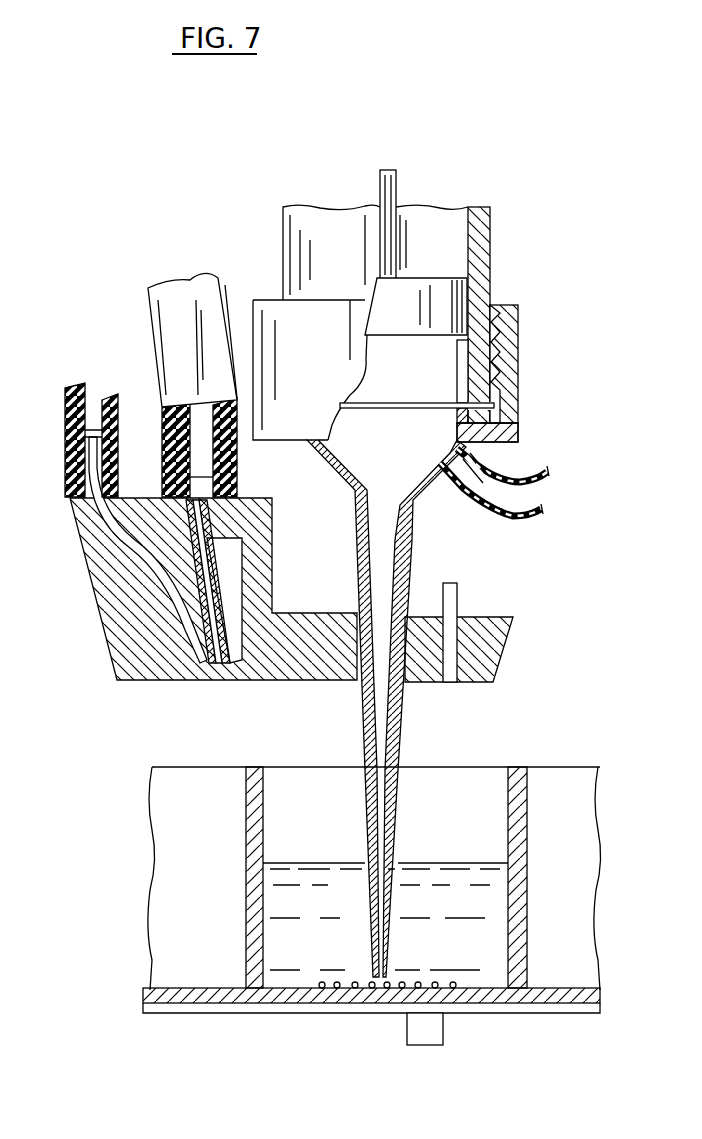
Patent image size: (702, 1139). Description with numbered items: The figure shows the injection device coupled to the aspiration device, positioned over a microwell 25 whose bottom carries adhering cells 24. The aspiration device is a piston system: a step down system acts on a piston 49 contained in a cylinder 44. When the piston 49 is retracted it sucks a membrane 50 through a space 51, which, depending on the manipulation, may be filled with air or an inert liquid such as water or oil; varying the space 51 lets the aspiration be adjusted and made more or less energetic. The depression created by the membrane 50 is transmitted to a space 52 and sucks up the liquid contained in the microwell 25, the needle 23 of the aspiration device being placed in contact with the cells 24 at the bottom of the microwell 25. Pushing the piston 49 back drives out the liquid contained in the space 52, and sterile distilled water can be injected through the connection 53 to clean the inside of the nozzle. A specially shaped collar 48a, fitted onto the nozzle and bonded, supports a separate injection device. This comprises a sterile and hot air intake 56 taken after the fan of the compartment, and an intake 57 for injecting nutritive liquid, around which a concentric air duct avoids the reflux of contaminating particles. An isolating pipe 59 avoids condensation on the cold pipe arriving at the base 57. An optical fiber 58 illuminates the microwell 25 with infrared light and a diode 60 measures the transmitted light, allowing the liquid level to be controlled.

The needle 23 is at (396, 733).
The cells 24 is at (363, 991).
The microwell 25 is at (490, 972).
The cylinder 44 is at (487, 237).
The collar 48a is at (143, 658).
The piston 49 is at (428, 293).
The membrane 50 is at (445, 383).
The space 51 is at (440, 384).
The space 52 is at (423, 433).
The connection 53 is at (530, 496).
The sterile and hot air intake 56 is at (65, 452).
The intake 57 is at (162, 448).
The optical fiber 58 is at (457, 598).
The isolating pipe 59 is at (232, 465).
The diode 60 is at (440, 1046).